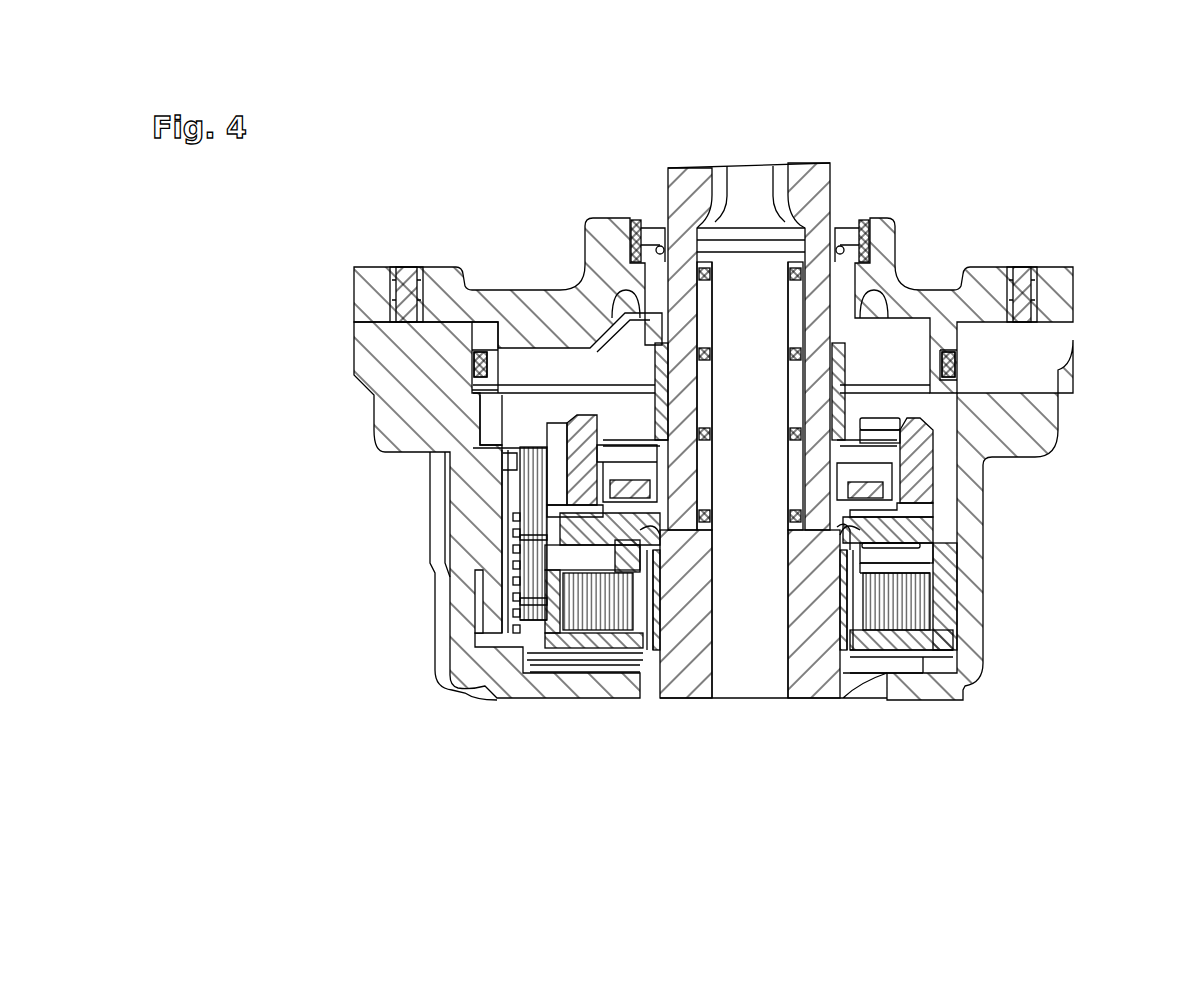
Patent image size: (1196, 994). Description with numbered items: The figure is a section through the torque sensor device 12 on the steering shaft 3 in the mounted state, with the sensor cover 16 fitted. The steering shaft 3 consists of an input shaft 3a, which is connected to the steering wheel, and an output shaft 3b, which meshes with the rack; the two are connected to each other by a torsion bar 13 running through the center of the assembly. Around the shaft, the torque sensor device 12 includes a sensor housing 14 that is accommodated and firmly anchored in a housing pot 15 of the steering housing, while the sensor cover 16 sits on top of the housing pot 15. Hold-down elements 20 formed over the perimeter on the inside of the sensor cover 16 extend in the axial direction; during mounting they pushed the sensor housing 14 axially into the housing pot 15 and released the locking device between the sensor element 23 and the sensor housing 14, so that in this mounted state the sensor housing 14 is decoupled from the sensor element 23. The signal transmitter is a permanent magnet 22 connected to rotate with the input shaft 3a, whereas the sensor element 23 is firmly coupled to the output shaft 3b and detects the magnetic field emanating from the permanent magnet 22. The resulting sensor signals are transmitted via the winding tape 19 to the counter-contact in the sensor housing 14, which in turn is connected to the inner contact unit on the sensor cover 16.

The steering shaft 3 is at (787, 440).
The input shaft 3a is at (697, 168).
The output shaft 3b is at (818, 698).
The torque sensor device 12 is at (1108, 442).
The torsion bar 13 is at (748, 698).
The sensor housing 14 is at (502, 500).
The housing pot 15 is at (970, 572).
The sensor cover 16 is at (1063, 299).
The winding tape 19 is at (930, 605).
The hold-down elements 20 is at (497, 423).
The permanent magnet 22 is at (917, 478).
The sensor element 23 is at (903, 527).